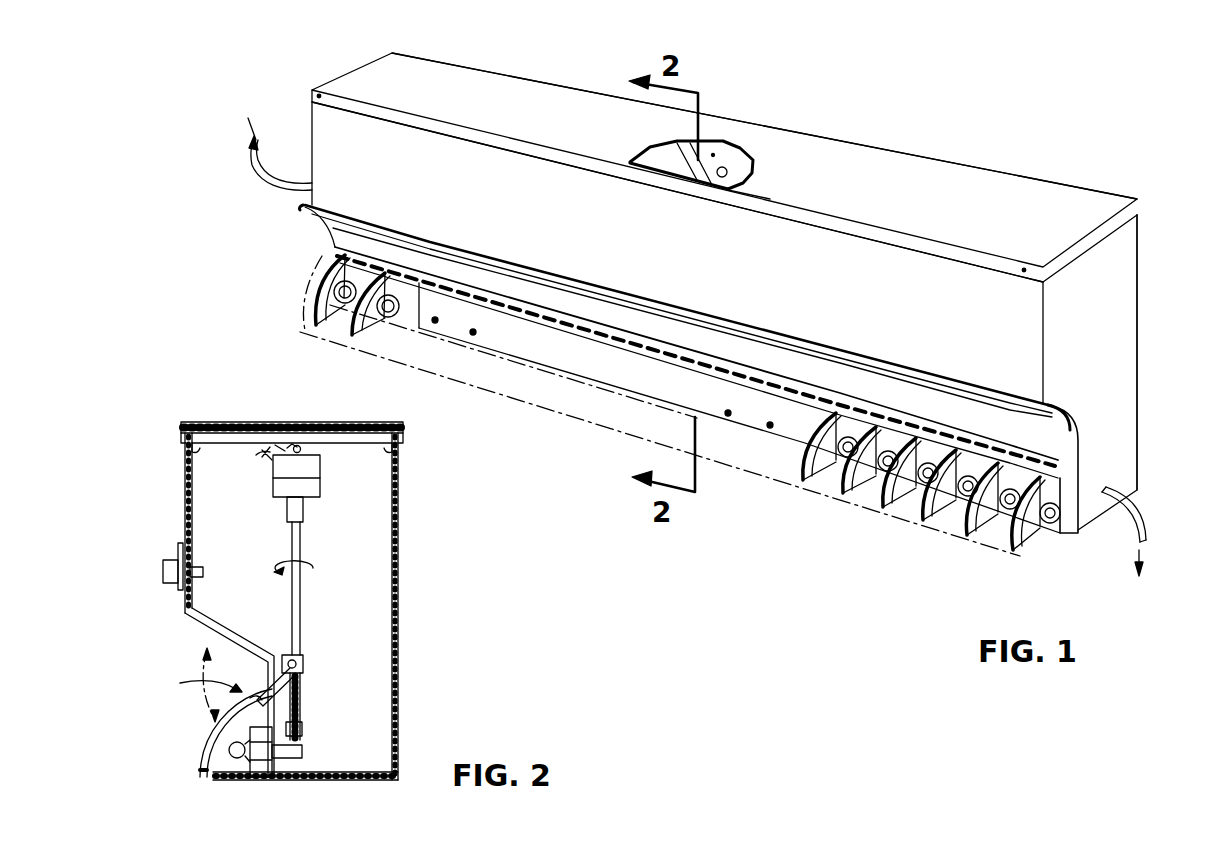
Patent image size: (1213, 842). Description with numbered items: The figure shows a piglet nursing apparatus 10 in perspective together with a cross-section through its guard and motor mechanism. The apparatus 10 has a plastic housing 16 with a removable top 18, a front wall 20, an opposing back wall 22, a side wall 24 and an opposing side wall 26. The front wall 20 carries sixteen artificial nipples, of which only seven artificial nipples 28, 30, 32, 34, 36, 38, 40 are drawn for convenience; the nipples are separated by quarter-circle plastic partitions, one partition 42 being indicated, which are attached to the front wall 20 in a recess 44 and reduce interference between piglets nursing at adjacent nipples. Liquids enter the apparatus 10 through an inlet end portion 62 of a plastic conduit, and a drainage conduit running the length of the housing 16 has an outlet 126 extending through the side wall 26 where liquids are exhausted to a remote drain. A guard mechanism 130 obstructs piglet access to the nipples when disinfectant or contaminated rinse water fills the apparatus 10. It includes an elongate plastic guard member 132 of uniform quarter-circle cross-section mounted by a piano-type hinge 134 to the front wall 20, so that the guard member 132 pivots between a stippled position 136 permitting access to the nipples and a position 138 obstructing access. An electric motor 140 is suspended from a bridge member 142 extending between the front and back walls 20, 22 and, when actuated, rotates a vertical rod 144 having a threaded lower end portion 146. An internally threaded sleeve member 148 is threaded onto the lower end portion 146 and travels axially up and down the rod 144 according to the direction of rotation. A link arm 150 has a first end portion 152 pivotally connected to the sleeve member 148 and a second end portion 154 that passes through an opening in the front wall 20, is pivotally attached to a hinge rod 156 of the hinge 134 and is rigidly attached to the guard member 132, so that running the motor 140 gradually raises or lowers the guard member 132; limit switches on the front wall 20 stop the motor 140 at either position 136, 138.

In FIG. 1, the nursing apparatus 10 is at (980, 106).
In FIG. 1, the housing 16 is at (1146, 260).
In FIG. 1, the removable top 18 is at (1000, 184).
In FIG. 2, the removable top 18 is at (258, 422).
In FIG. 1, the front wall 20 is at (875, 306).
In FIG. 2, the front wall 20 is at (185, 497).
In FIG. 2, the back wall 22 is at (400, 545).
In FIG. 1, the side wall 24 is at (302, 105).
In FIG. 1, the opposing side wall 26 is at (1115, 323).
In FIG. 1, the artificial nipple 28 is at (340, 326).
In FIG. 1, the artificial nipple 30 is at (378, 340).
In FIG. 1, the artificial nipple 32 is at (838, 488).
In FIG. 1, the artificial nipple 34 is at (884, 500).
In FIG. 1, the artificial nipple 36 is at (925, 510).
In FIG. 1, the artificial nipple 38 is at (965, 522).
In FIG. 1, the artificial nipple 40 is at (1000, 540).
In FIG. 1, the partition 42 is at (1038, 552).
In FIG. 2, the recess 44 is at (218, 635).
In FIG. 1, the inlet end portion 62 is at (262, 176).
In FIG. 1, the outlet 126 is at (1147, 499).
In FIG. 2, the guard mechanism 130 is at (170, 706).
In FIG. 1, the guard member 132 is at (570, 298).
In FIG. 2, the guard member 132 is at (205, 745).
In FIG. 1, the piano-type hinge 134 is at (662, 345).
In FIG. 2, the access-permitting position 136 is at (190, 636).
In FIG. 2, the access-obstructing position 138 is at (200, 766).
In FIG. 2, the electric motor 140 is at (326, 480).
In FIG. 1, the bridge member 142 is at (680, 170).
In FIG. 2, the bridge member 142 is at (220, 444).
In FIG. 2, the vertical rod 144 is at (305, 600).
In FIG. 2, the threaded lower end portion 146 is at (303, 690).
In FIG. 2, the sleeve member 148 is at (305, 660).
In FIG. 2, the link arm 150 is at (279, 660).
In FIG. 2, the first end portion 152 is at (306, 664).
In FIG. 2, the second end portion 154 is at (197, 686).
In FIG. 2, the hinge rod 156 is at (302, 708).